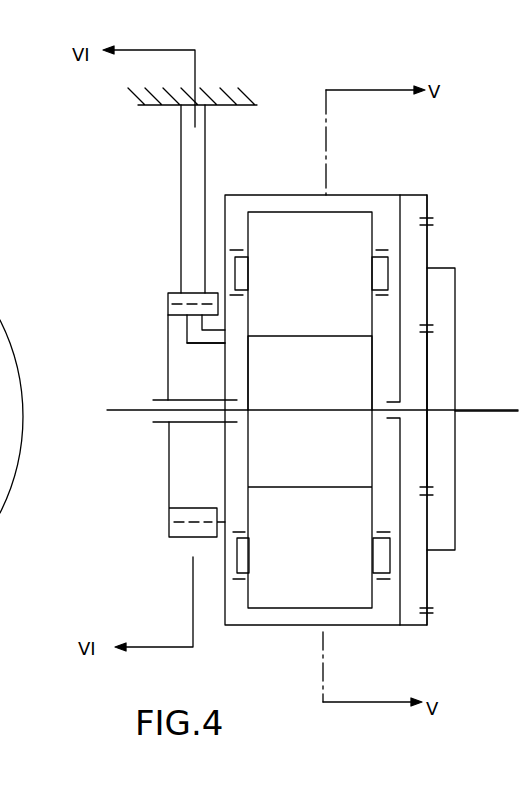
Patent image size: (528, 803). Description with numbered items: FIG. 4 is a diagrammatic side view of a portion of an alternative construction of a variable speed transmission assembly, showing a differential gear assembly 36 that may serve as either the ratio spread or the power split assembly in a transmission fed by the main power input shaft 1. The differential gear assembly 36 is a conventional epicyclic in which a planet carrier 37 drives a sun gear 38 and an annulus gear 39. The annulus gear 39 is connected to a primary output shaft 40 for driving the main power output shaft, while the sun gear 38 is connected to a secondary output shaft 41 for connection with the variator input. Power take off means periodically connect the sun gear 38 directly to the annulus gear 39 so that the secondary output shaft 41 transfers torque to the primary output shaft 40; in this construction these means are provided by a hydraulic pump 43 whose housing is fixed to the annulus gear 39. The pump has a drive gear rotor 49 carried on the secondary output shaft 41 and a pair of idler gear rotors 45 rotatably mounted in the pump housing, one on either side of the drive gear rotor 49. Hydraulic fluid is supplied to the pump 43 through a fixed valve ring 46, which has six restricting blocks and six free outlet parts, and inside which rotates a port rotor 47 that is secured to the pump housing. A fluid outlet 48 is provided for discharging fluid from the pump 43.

The main power input shaft 1 is at (495, 411).
The differential gear assembly 36 is at (435, 153).
The planet carrier 37 is at (455, 268).
The sun gear 38 is at (427, 370).
The annulus gear 39 is at (427, 195).
The primary output shaft 40 is at (160, 423).
The secondary output shaft 41 is at (130, 411).
The hydraulic pump 43 is at (290, 108).
The idler gear rotors 45 is at (321, 283).
The fixed valve ring 46 is at (168, 295).
The port rotor 47 is at (182, 378).
The fluid outlet 48 is at (198, 338).
The drive gear rotor 49 is at (323, 388).